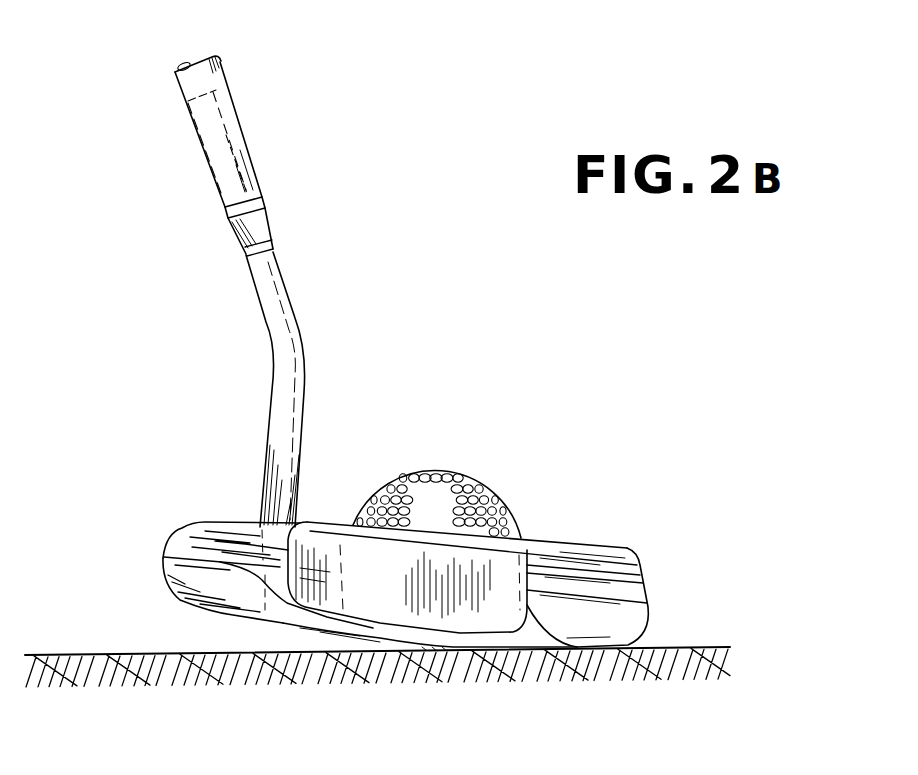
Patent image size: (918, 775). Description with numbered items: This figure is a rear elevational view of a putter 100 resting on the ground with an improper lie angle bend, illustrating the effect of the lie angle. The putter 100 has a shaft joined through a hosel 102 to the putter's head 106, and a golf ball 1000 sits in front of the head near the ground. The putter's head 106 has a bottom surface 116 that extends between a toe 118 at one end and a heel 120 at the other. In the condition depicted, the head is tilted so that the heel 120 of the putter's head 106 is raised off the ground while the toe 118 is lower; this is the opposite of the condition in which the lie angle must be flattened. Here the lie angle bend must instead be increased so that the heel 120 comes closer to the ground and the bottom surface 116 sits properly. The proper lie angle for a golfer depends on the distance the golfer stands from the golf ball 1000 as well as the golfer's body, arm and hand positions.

The putter 100 is at (422, 543).
The hosel 102 is at (292, 293).
The putter's head 106 is at (643, 580).
The bottom surface 116 is at (327, 633).
The toe 118 is at (216, 63).
The heel 120 is at (162, 558).
The golf ball 1000 is at (385, 480).